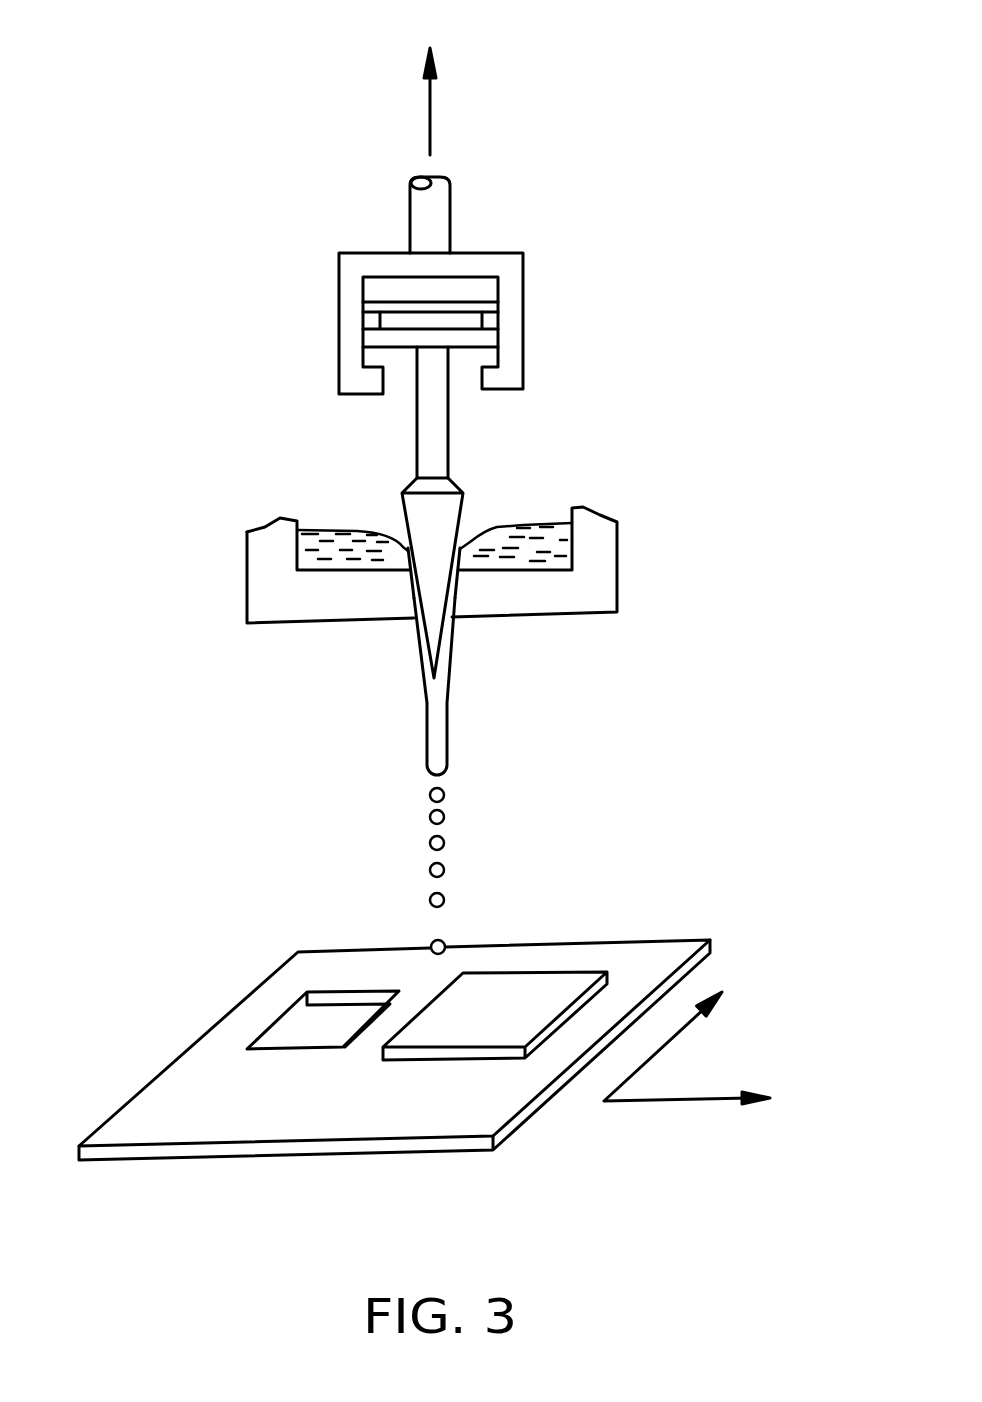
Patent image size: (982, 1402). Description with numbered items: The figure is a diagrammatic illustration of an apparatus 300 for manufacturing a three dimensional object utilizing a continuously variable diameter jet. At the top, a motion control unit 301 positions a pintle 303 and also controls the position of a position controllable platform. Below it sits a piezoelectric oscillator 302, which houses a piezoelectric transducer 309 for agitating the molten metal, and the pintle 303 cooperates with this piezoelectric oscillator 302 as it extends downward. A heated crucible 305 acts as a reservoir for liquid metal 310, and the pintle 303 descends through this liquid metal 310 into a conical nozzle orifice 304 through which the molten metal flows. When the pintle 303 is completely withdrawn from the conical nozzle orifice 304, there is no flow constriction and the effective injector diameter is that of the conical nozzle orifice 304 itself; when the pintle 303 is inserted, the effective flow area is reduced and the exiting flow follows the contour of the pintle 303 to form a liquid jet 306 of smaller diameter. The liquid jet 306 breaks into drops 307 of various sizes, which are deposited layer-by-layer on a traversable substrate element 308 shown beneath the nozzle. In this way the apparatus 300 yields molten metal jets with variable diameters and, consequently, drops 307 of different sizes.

The apparatus 300 is at (562, 127).
The motion control unit 301 is at (422, 68).
The piezoelectric oscillator 302 is at (525, 361).
The pintle 303 is at (455, 480).
The conical nozzle orifice 304 is at (410, 567).
The heated crucible 305 is at (512, 617).
The liquid jet 306 is at (427, 743).
The drops 307 is at (431, 898).
The traversable substrate element 308 is at (540, 1108).
The piezoelectric transducer 309 is at (392, 325).
The liquid metal 310 is at (563, 540).